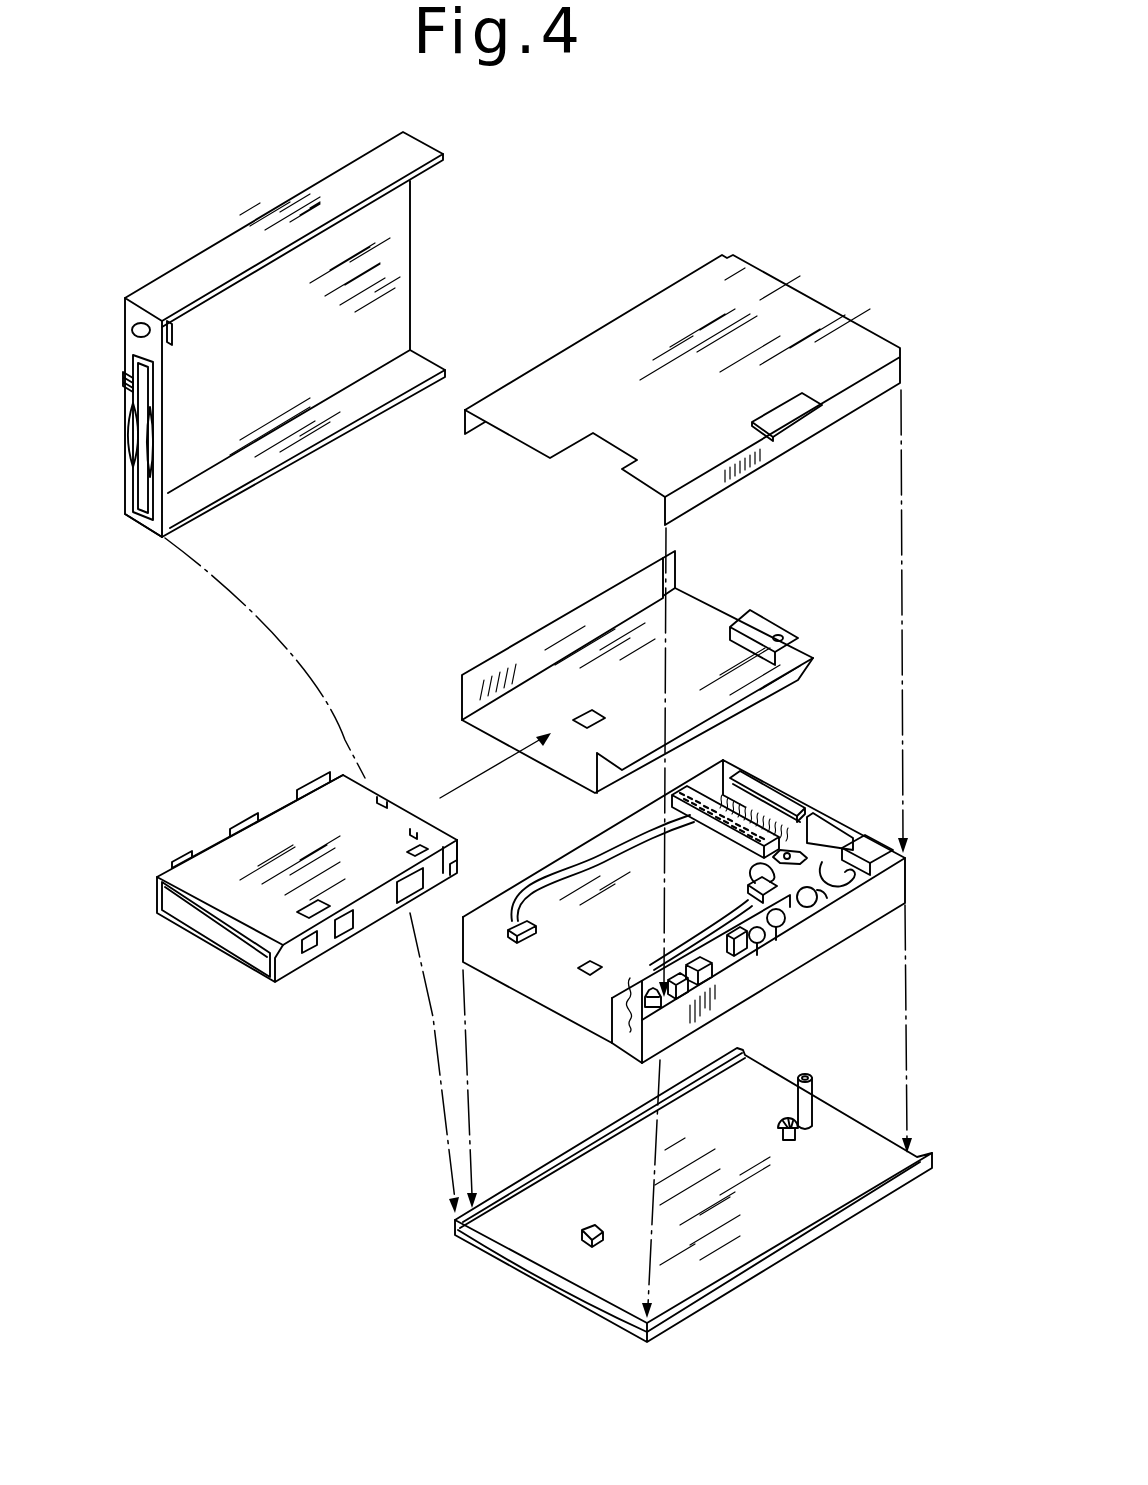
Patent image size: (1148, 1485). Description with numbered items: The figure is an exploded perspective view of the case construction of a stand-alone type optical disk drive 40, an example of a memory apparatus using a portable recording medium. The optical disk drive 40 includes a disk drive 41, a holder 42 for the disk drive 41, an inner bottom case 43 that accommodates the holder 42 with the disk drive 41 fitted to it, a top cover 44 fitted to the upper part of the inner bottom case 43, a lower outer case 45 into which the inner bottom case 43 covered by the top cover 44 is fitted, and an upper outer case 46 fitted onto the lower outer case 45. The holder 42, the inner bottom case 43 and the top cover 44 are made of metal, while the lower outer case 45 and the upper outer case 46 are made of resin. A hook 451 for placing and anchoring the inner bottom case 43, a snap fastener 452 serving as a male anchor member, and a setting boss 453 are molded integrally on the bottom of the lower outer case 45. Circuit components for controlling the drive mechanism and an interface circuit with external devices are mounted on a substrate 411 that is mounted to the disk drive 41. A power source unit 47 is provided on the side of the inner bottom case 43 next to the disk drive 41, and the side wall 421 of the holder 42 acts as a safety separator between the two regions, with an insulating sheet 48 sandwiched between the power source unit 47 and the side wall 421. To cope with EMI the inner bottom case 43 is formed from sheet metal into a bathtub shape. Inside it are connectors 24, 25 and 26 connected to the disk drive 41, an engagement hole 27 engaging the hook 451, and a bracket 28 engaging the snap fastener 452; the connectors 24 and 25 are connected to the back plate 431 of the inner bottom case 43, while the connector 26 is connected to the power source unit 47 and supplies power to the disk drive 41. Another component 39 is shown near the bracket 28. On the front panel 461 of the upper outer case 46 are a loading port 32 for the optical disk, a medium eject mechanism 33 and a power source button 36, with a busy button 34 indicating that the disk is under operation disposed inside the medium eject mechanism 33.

The connector 24 is at (527, 940).
The connector 25 is at (745, 832).
The connector 26 is at (745, 905).
The engagement hole 27 is at (587, 975).
The bracket 28 is at (805, 850).
The loading port 32 is at (143, 435).
The medium eject mechanism 33 is at (140, 402).
The busy button 34 is at (123, 372).
The power source button 36 is at (153, 342).
The wire 39 is at (867, 857).
The optical disk drive 40 is at (868, 270).
The disk drive 41 is at (358, 935).
The substrate 411 is at (285, 833).
The holder 42 is at (705, 602).
The side wall 421 is at (610, 777).
The inner bottom case 43 is at (817, 947).
The back plate 431 is at (797, 812).
The top cover 44 is at (625, 310).
The lower outer case 45 is at (790, 1255).
The hook 451 is at (587, 1225).
The snap fastener 452 is at (789, 1140).
The setting boss 453 is at (808, 1103).
The upper outer case 46 is at (403, 274).
The front panel 461 is at (153, 527).
The power source unit 47 is at (765, 943).
The insulating sheet 48 is at (608, 1036).